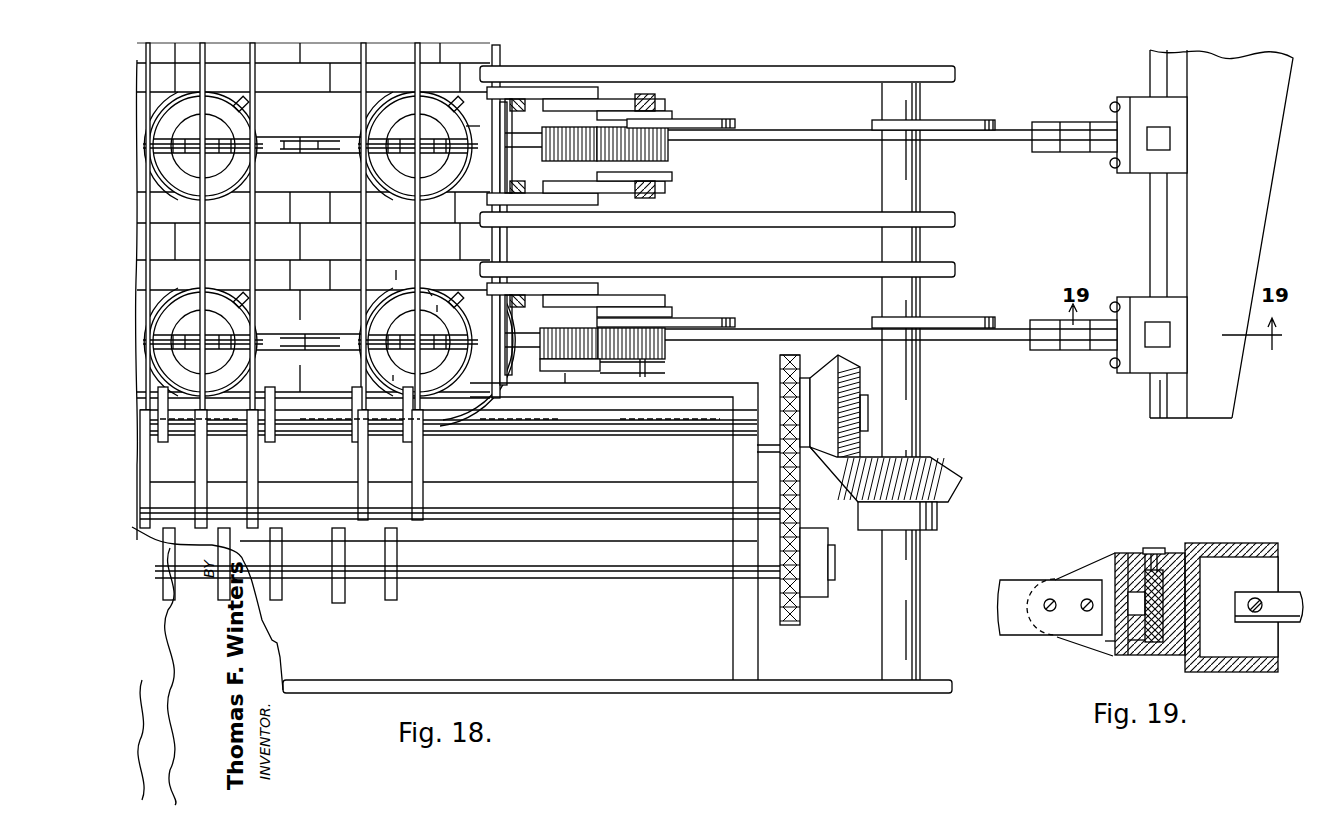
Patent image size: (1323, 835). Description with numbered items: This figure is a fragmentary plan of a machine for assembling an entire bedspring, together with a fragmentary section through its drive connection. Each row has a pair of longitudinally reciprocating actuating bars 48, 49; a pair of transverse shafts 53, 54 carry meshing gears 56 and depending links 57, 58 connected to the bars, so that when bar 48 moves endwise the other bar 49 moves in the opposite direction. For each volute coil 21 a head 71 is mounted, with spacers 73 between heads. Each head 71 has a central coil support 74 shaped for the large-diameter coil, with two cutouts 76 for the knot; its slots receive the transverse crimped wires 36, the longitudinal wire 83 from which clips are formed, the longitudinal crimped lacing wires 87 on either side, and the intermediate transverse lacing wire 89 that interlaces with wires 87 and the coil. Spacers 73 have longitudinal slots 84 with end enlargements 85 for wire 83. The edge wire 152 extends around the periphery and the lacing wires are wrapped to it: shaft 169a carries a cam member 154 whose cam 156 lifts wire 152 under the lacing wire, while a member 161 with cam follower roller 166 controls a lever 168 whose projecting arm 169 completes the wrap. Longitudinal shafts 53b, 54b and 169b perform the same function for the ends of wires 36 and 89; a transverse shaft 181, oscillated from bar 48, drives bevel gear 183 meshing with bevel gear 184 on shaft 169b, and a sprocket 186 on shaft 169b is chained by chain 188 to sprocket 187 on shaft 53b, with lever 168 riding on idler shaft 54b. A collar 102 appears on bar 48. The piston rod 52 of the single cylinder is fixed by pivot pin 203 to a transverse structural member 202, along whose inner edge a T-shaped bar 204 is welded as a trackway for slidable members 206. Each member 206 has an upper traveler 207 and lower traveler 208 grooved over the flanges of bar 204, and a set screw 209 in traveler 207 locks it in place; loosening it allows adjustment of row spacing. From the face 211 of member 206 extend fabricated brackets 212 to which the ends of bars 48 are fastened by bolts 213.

In FIG. 18, the volute coil 21 is at (435, 289).
In FIG. 18, the transverse crimped wire 36 is at (363, 58).
In FIG. 18, the actuating bar 48 is at (800, 132).
In FIG. 19, the actuating bar 48 is at (1017, 632).
In FIG. 18, the actuating bar 49 is at (520, 143).
In FIG. 19, the piston rod 52 is at (1290, 622).
In FIG. 18, the transverse shaft 53 is at (652, 367).
In FIG. 18, the longitudinal shaft 53b is at (522, 579).
In FIG. 18, the transverse shaft 54 is at (573, 375).
In FIG. 18, the idler shaft 54b is at (570, 511).
In FIG. 18, the meshing gears 56 is at (648, 150).
In FIG. 18, the depending link 57 is at (710, 120).
In FIG. 18, the depending link 58 is at (538, 373).
In FIG. 18, the head 71 is at (399, 268).
In FIG. 18, the spacer 73 is at (305, 140).
In FIG. 18, the central coil support 74 is at (448, 395).
In FIG. 18, the cutout 76 is at (437, 306).
In FIG. 18, the longitudinal wire 83 is at (305, 335).
In FIG. 18, the longitudinal slot 84 is at (318, 152).
In FIG. 18, the end enlargement 85 is at (285, 160).
In FIG. 18, the longitudinal crimped lacing wire 87 is at (443, 92).
In FIG. 18, the intermediate transverse lacing wire 89 is at (418, 54).
In FIG. 18, the collar 102 is at (965, 120).
In FIG. 18, the edge wire 152 is at (500, 253).
In FIG. 18, the cam member 154 is at (215, 432).
In FIG. 18, the cam 156 is at (524, 99).
In FIG. 18, the member 161 is at (663, 115).
In FIG. 18, the cam follower roller 166 is at (652, 97).
In FIG. 18, the lever 168 is at (610, 99).
In FIG. 18, the projecting arm 169 is at (517, 88).
In FIG. 18, the shaft 169a is at (476, 131).
In FIG. 18, the longitudinal shaft 169b is at (530, 436).
In FIG. 18, the transverse shaft 181 is at (908, 585).
In FIG. 18, the bevel gear 183 is at (945, 481).
In FIG. 18, the bevel gear 184 is at (832, 385).
In FIG. 18, the sprocket 186 is at (790, 438).
In FIG. 18, the sprocket 187 is at (800, 606).
In FIG. 18, the chain 188 is at (798, 502).
In FIG. 18, the transverse structural member 202 is at (1210, 190).
In FIG. 19, the transverse structural member 202 is at (1252, 673).
In FIG. 19, the pivot pin 203 is at (1255, 613).
In FIG. 18, the T-shaped bar 204 is at (1160, 396).
In FIG. 19, the T-shaped bar 204 is at (1160, 603).
In FIG. 18, the slidable member 206 is at (1125, 366).
In FIG. 19, the slidable member 206 is at (1117, 543).
In FIG. 19, the upper traveler 207 is at (1140, 560).
In FIG. 19, the lower traveler 208 is at (1138, 656).
In FIG. 18, the set screw 209 is at (1172, 136).
In FIG. 19, the set screw 209 is at (1160, 548).
In FIG. 19, the face 211 is at (1108, 648).
In FIG. 18, the fabricated bracket 212 is at (1062, 140).
In FIG. 19, the fabricated bracket 212 is at (1095, 568).
In FIG. 19, the bolt 213 is at (1053, 611).